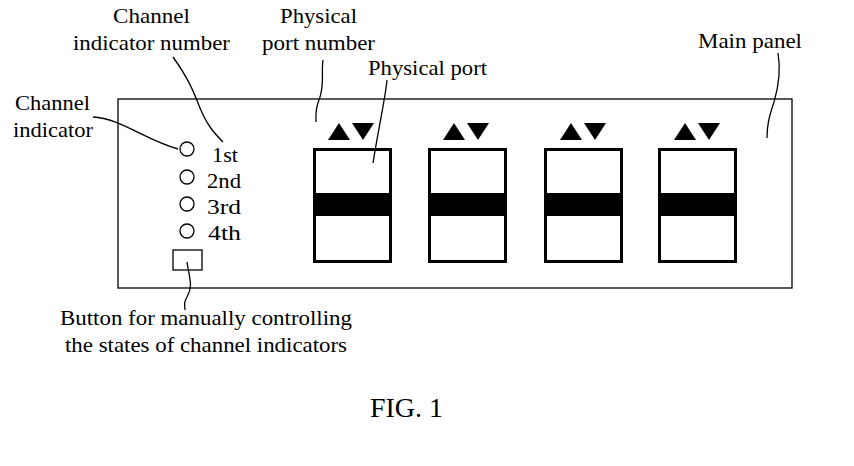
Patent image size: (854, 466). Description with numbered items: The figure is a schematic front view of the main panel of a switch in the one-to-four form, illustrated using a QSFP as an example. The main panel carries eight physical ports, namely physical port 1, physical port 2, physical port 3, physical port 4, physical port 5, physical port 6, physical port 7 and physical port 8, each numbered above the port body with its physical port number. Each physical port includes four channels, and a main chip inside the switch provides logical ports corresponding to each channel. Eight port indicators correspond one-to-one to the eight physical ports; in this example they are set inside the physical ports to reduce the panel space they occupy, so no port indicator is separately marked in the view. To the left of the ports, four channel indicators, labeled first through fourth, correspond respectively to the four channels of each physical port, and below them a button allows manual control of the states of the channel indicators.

The physical port 1 is at (352, 191).
The physical port 2 is at (370, 132).
The physical port 3 is at (467, 191).
The physical port 4 is at (484, 132).
The physical port 5 is at (583, 191).
The physical port 6 is at (601, 132).
The physical port 7 is at (697, 191).
The physical port 8 is at (714, 132).